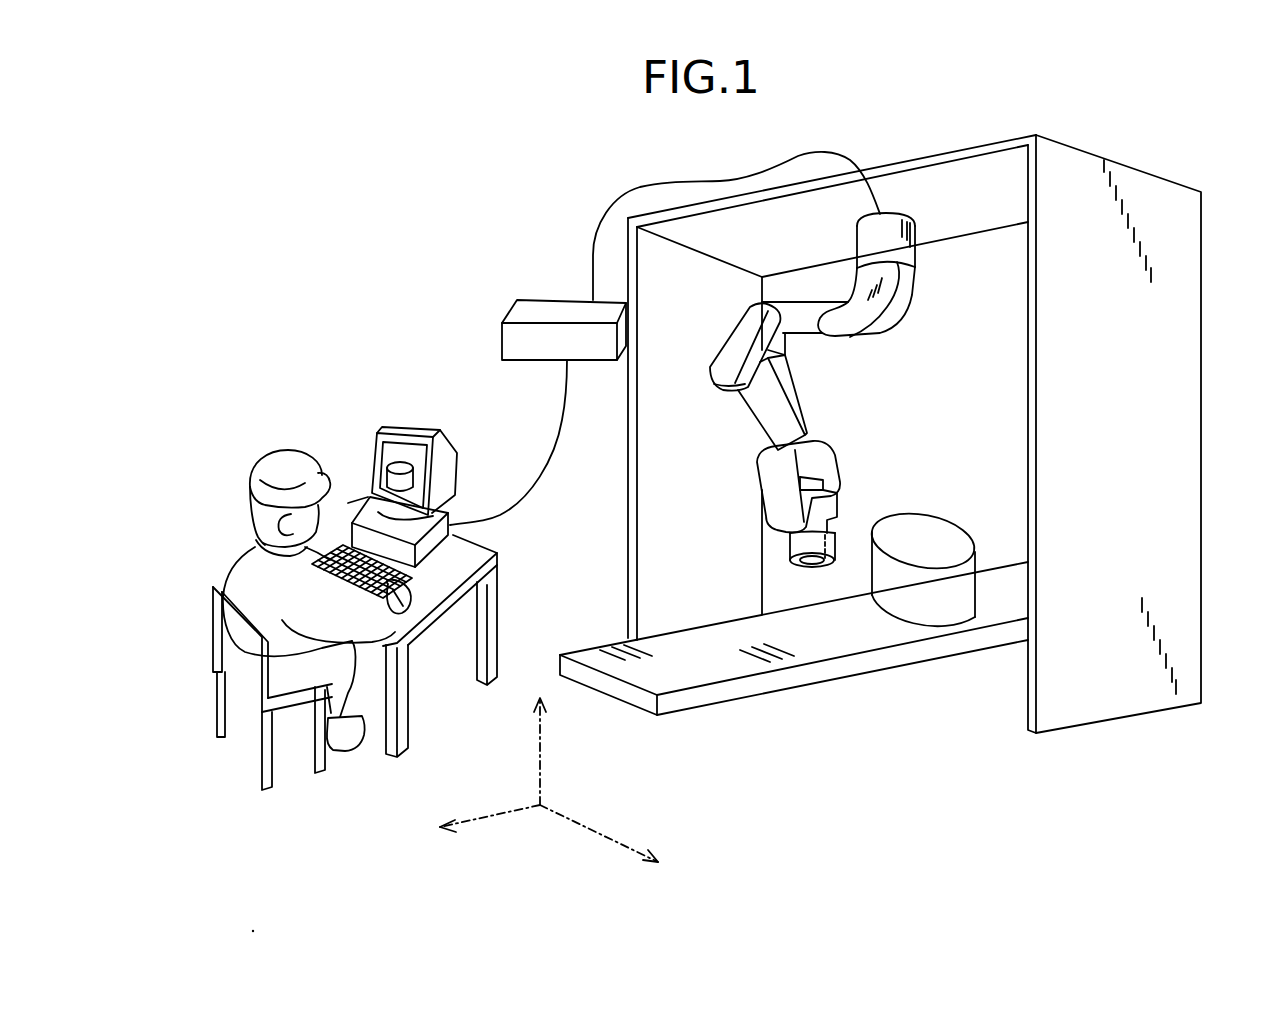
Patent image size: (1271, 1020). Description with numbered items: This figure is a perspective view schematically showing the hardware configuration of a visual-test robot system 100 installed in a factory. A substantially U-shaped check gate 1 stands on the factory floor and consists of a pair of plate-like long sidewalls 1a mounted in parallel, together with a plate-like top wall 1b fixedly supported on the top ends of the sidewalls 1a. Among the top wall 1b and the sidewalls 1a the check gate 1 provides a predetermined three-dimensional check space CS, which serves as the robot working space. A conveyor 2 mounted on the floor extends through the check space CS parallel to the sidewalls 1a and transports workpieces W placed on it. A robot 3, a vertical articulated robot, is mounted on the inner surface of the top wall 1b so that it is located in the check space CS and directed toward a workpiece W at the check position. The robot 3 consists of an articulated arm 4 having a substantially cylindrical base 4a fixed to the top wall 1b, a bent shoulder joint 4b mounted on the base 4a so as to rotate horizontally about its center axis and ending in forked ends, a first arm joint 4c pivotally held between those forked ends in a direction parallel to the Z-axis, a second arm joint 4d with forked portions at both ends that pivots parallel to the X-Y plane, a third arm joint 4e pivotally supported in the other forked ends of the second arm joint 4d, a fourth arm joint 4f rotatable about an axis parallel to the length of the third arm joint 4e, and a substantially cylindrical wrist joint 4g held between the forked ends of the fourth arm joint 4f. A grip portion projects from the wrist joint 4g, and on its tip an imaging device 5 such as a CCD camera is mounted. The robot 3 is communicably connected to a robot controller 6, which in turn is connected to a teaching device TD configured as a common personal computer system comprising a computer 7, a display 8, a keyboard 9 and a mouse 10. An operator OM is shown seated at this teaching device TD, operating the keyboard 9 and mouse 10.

The check gate 1 is at (1072, 162).
The long sidewalls 1a is at (1180, 392).
The top wall 1b is at (880, 172).
The conveyor 2 is at (722, 666).
The robot 3 is at (812, 381).
The articulated arm 4 is at (742, 417).
The base 4a is at (913, 256).
The bent shoulder joint 4b is at (905, 295).
The first arm joint 4c is at (804, 328).
The second arm joint 4d is at (746, 340).
The third arm joint 4e is at (764, 428).
The fourth arm joint 4f is at (779, 494).
The wrist joint 4g is at (822, 500).
The imaging device 5 is at (798, 545).
The robot controller 6 is at (552, 308).
The computer 7 is at (482, 534).
The display 8 is at (410, 432).
The keyboard 9 is at (340, 550).
The mouse 10 is at (406, 611).
The visual-test robot system 100 is at (390, 793).
The workpiece W is at (925, 538).
The check space CS is at (1008, 452).
The teaching device TD is at (374, 420).
The operator OM is at (247, 549).